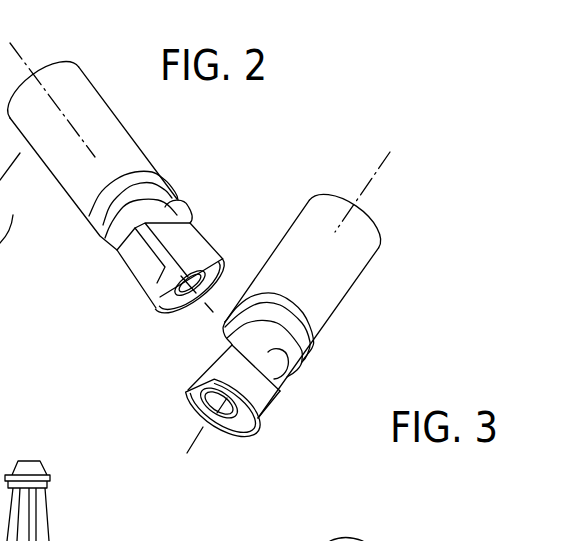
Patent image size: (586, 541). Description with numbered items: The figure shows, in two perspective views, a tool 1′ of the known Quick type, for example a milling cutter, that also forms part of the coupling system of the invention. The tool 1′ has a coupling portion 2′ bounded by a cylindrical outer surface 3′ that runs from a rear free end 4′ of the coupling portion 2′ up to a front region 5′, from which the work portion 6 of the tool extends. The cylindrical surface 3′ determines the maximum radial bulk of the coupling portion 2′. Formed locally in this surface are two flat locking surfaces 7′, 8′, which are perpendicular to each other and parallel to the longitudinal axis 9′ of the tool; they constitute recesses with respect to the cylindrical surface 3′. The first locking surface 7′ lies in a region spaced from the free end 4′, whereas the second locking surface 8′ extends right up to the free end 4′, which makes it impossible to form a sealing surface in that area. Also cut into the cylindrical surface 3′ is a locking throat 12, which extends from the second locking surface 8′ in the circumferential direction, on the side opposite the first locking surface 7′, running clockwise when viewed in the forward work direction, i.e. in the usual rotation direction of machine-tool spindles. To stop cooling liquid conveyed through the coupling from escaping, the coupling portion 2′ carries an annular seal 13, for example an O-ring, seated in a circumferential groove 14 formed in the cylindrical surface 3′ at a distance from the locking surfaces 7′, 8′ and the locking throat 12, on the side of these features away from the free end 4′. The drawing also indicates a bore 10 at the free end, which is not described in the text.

In FIG. 2, the tool 1′ is at (190, 184).
In FIG. 3, the tool 1′ is at (350, 324).
In FIG. 2, the coupling portion 2′ is at (152, 310).
In FIG. 3, the coupling portion 2′ is at (266, 397).
In FIG. 3, the cylindrical outer surface 3′ is at (285, 382).
In FIG. 3, the rear free end 4′ is at (243, 423).
In FIG. 3, the front region 5′ is at (253, 303).
In FIG. 3, the work portion 6 is at (363, 262).
In FIG. 2, the first locking surface 7′ is at (137, 269).
In FIG. 2, the second locking surface 8′ is at (199, 241).
In FIG. 3, the second locking surface 8′ is at (195, 363).
In FIG. 2, the longitudinal axis 9′ is at (32, 68).
In FIG. 3, the longitudinal axis 9′ is at (355, 202).
In FIG. 2, the bore / hole 10 is at (190, 283).
In FIG. 3, the bore / hole 10 is at (228, 413).
In FIG. 2, the locking throat 12 is at (187, 217).
In FIG. 3, the locking throat 12 is at (282, 360).
In FIG. 2, the annular seal 13 is at (98, 245).
In FIG. 2, the circumferential groove 14 is at (148, 182).